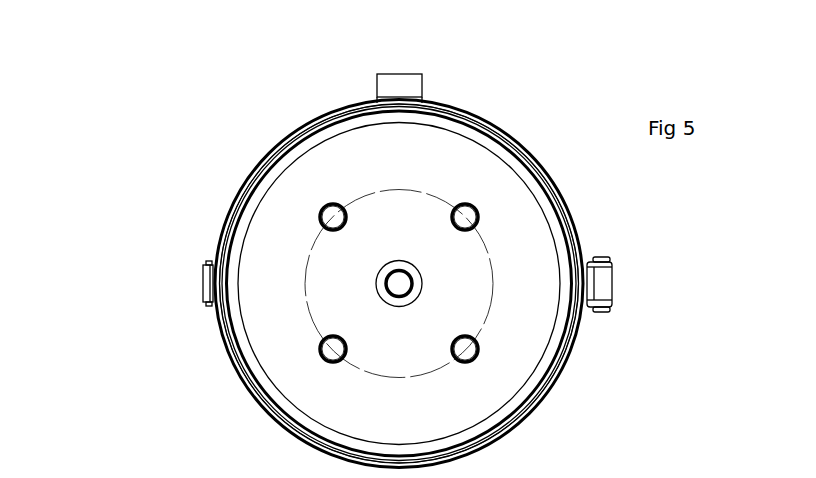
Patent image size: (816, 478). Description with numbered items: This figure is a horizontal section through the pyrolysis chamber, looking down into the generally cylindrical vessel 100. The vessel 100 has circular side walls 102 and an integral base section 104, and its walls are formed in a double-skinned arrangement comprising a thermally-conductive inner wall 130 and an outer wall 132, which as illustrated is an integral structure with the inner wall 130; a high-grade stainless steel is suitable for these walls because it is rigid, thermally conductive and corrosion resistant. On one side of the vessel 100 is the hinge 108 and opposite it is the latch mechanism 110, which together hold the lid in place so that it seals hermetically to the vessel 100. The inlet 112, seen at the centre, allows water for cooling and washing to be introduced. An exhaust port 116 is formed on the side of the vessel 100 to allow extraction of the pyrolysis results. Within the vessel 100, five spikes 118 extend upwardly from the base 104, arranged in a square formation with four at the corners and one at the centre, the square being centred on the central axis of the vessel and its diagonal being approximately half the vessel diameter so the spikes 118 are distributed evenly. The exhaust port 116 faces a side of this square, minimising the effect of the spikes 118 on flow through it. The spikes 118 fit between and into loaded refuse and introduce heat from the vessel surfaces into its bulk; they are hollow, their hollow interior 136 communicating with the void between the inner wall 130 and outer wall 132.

The cylindrical vessel 100 is at (244, 384).
The circular side walls 102 is at (572, 209).
The integral base section 104 is at (563, 367).
The hinge 108 is at (612, 283).
The latch mechanism 110 is at (203, 281).
The inlet 112 is at (424, 288).
The exhaust port 116 is at (410, 73).
The spikes 118 is at (329, 222).
The inner wall 130 is at (267, 168).
The outer wall 132 is at (233, 200).
The hollow interior 136 is at (337, 216).